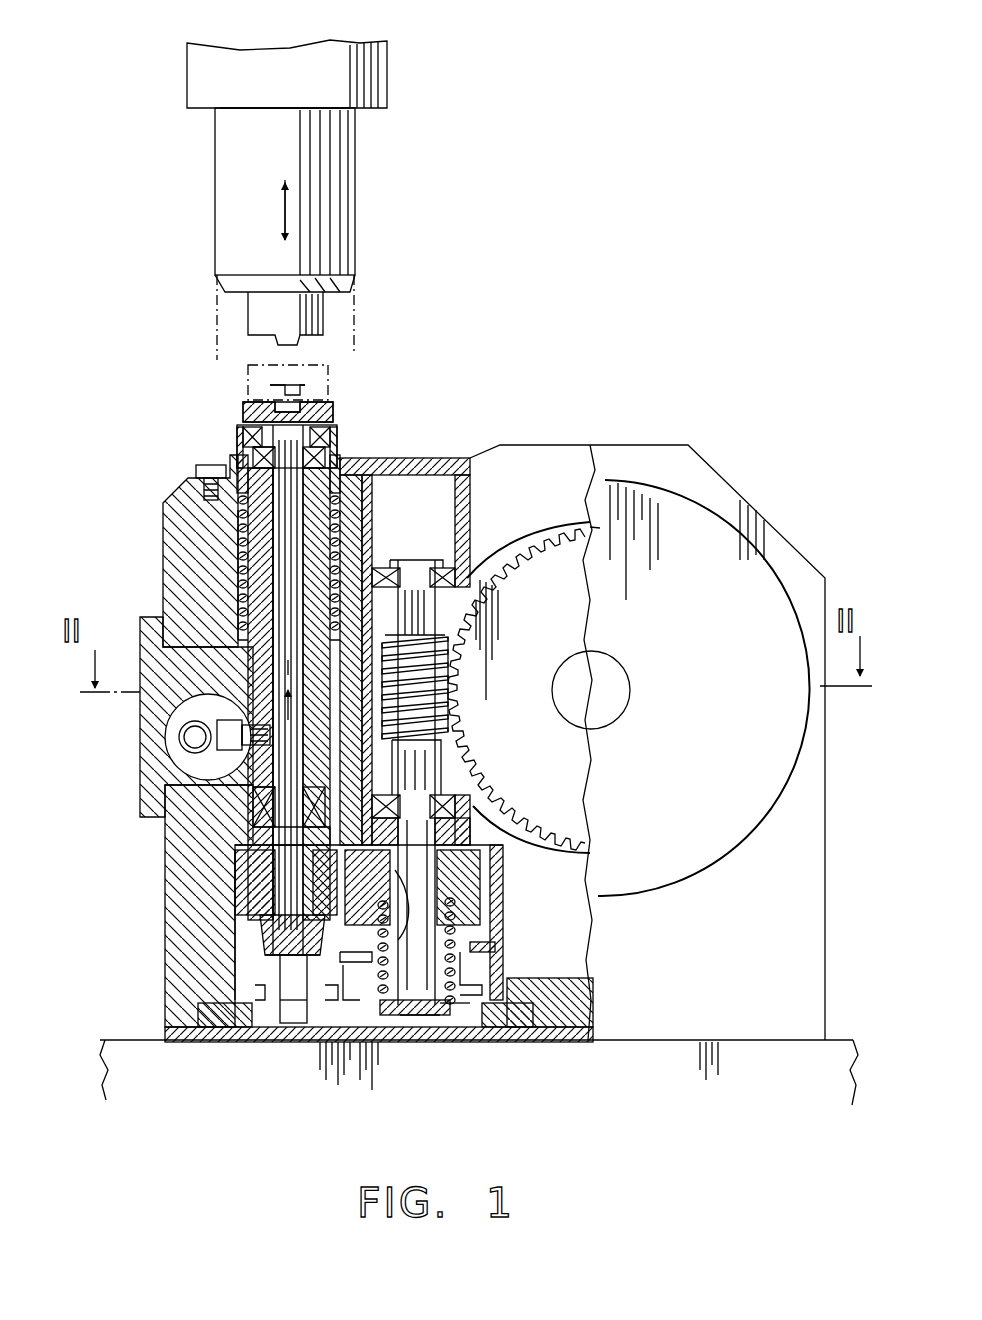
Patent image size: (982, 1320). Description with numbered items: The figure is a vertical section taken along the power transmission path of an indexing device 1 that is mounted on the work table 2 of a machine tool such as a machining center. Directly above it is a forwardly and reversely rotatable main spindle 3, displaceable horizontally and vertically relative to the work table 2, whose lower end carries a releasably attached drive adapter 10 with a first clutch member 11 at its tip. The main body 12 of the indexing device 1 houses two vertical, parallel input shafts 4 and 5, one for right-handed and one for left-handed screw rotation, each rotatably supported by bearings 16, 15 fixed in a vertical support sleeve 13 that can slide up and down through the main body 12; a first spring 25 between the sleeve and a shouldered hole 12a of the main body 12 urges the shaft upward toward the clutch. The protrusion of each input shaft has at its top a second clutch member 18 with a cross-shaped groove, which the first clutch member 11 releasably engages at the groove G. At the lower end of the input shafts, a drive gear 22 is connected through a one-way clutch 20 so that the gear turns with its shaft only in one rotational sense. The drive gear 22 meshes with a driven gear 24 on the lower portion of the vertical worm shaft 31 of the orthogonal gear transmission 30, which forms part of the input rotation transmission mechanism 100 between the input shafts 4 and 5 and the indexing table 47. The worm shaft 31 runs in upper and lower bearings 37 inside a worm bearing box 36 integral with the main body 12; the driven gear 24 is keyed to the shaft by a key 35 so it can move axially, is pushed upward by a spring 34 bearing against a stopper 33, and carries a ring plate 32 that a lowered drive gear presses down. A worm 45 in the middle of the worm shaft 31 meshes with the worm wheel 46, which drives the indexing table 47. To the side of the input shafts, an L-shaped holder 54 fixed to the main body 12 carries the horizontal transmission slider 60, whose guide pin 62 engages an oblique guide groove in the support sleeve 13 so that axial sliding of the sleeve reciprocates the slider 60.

The indexing device 1 is at (570, 443).
The work table 2 is at (840, 1038).
The main spindle 3 is at (387, 72).
The input shaft 4 is at (320, 408).
The input shaft 5 is at (288, 412).
The groove G is at (290, 404).
The drive adapter 10 is at (343, 208).
The first clutch member 11 is at (318, 312).
The main body 12 is at (178, 526).
The shouldered hole 12a is at (240, 603).
The support sleeve 13 is at (345, 520).
The bearing 15 is at (250, 452).
The bearing 16 is at (264, 617).
The second clutch member 18 is at (280, 405).
The one-way clutch 20 is at (240, 905).
The drive gear 22 is at (262, 955).
The driven gear 24 is at (473, 912).
The first spring 25 is at (210, 492).
The orthogonal gear transmission 30 is at (563, 627).
The worm shaft 31 is at (437, 783).
The ring plate 32 is at (497, 947).
The stopper 33 is at (468, 1010).
The spring 34 is at (476, 1005).
The key 35 is at (400, 887).
The worm bearing box 36 is at (462, 512).
The bearing 37 is at (470, 580).
The worm 45 is at (446, 695).
The worm wheel 46 is at (553, 722).
The indexing table 47 is at (702, 523).
The holder 54 is at (143, 642).
The transmission slider 60 is at (196, 707).
The guide pin 62 is at (227, 752).
The input rotation transmission mechanism 100 is at (288, 980).